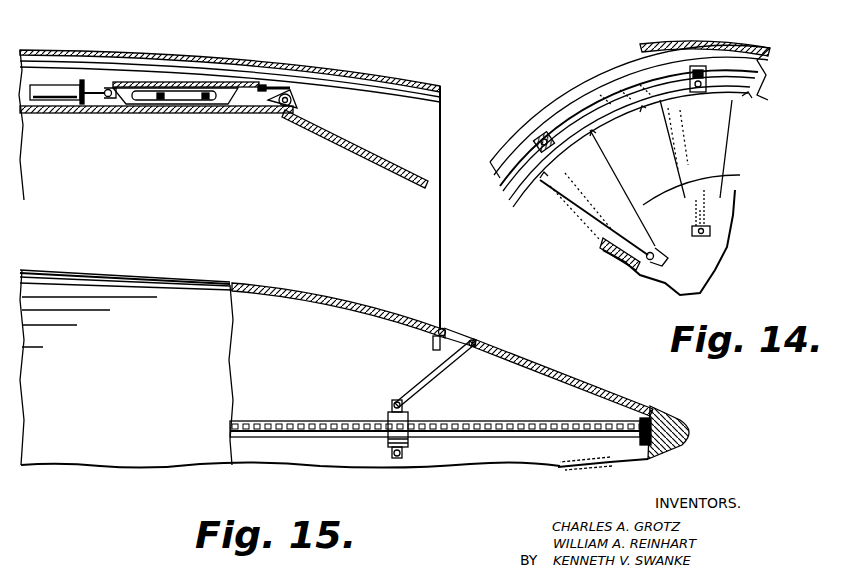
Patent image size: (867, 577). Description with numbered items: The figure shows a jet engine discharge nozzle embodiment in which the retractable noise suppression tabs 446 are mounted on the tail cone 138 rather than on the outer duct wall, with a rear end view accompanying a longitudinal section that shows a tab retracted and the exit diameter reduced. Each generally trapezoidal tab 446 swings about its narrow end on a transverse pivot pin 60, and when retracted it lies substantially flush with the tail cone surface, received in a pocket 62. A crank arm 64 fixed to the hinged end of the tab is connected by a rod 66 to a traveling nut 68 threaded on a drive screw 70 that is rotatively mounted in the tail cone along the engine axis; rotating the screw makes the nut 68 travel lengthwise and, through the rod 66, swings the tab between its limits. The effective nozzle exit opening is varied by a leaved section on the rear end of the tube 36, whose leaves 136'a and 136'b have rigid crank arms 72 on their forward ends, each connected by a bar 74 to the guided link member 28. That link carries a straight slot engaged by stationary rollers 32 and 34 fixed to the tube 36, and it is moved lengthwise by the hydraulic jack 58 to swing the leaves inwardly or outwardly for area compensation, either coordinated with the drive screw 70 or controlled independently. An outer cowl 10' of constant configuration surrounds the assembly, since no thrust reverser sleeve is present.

In FIG. 15, the outer cowl 10' is at (229, 168).
In FIG. 14, the outer cowl 10' is at (630, 96).
In FIG. 15, the link member 28 is at (173, 82).
In FIG. 14, the link member 28 is at (660, 60).
In FIG. 15, the roller 32 is at (162, 100).
In FIG. 15, the roller 34 is at (208, 100).
In FIG. 15, the tube 36 is at (110, 114).
In FIG. 15, the hydraulic jack 58 is at (43, 86).
In FIG. 15, the pivot pin 60 is at (438, 328).
In FIG. 14, the pivot pin 60 is at (645, 262).
In FIG. 14, the pocket 62 is at (728, 199).
In FIG. 15, the crank arm 64 is at (462, 334).
In FIG. 14, the crank arm 64 is at (710, 236).
In FIG. 15, the rod 66 is at (440, 378).
In FIG. 15, the traveling nut 68 is at (388, 415).
In FIG. 15, the drive screw 70 is at (300, 420).
In FIG. 15, the crank arm 72 is at (298, 99).
In FIG. 14, the crank arm 72 is at (538, 134).
In FIG. 15, the bar 74 is at (277, 85).
In FIG. 15, the leaf 136'a is at (350, 149).
In FIG. 14, the leaf 136'a is at (630, 146).
In FIG. 14, the leaf 136'b is at (629, 121).
In FIG. 15, the tail cone 138 is at (528, 362).
In FIG. 14, the tail cone 138 is at (700, 270).
In FIG. 15, the noise suppression tab 446 is at (356, 280).
In FIG. 14, the noise suppression tab 446 is at (585, 193).